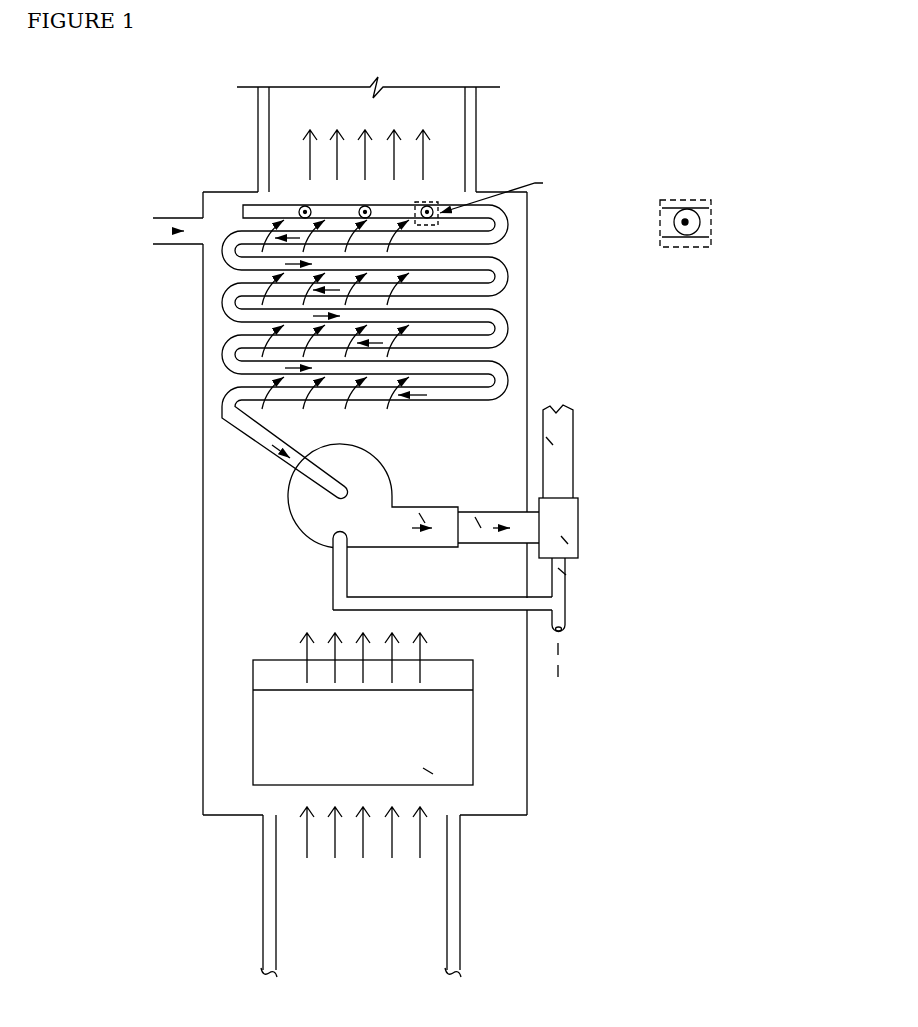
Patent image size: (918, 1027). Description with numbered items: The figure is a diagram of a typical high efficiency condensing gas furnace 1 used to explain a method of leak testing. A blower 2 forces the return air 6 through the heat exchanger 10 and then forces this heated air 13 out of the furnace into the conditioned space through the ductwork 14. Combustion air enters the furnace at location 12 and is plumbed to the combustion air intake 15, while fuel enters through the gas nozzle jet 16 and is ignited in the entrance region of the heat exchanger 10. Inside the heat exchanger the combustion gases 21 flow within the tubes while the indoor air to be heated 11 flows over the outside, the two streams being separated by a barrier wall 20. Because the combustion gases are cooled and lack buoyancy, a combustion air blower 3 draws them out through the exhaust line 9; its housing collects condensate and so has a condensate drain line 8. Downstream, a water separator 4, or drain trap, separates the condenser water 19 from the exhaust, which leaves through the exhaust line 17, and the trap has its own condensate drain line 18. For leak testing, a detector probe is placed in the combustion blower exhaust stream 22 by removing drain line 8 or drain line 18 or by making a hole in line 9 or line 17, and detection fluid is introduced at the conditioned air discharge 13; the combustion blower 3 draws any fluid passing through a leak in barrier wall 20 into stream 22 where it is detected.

The furnace 1 is at (525, 787).
The blower 2 is at (428, 772).
The combustion air blower 3 is at (422, 518).
The water separator 4 is at (565, 540).
The return air 6 is at (363, 849).
The condensate drain line 8 is at (332, 573).
The exhaust line 9 is at (478, 522).
The heat exchanger 10 is at (242, 427).
The indoor air to be heated 11 is at (252, 347).
The combustion air entry 12 is at (165, 232).
The conditioned air discharge 13 is at (423, 170).
The ductwork 14 is at (483, 137).
The combustion air intake 15 is at (707, 213).
The gas nozzle jet 16 is at (702, 223).
The exhaust line after the water trap 17 is at (550, 440).
The condensate drain line from the condensate trap 18 is at (562, 572).
The condenser water 19 is at (558, 673).
The barrier wall 20 is at (510, 280).
The combustion gases 21 is at (272, 268).
The combustion blower exhaust stream 22 is at (505, 538).